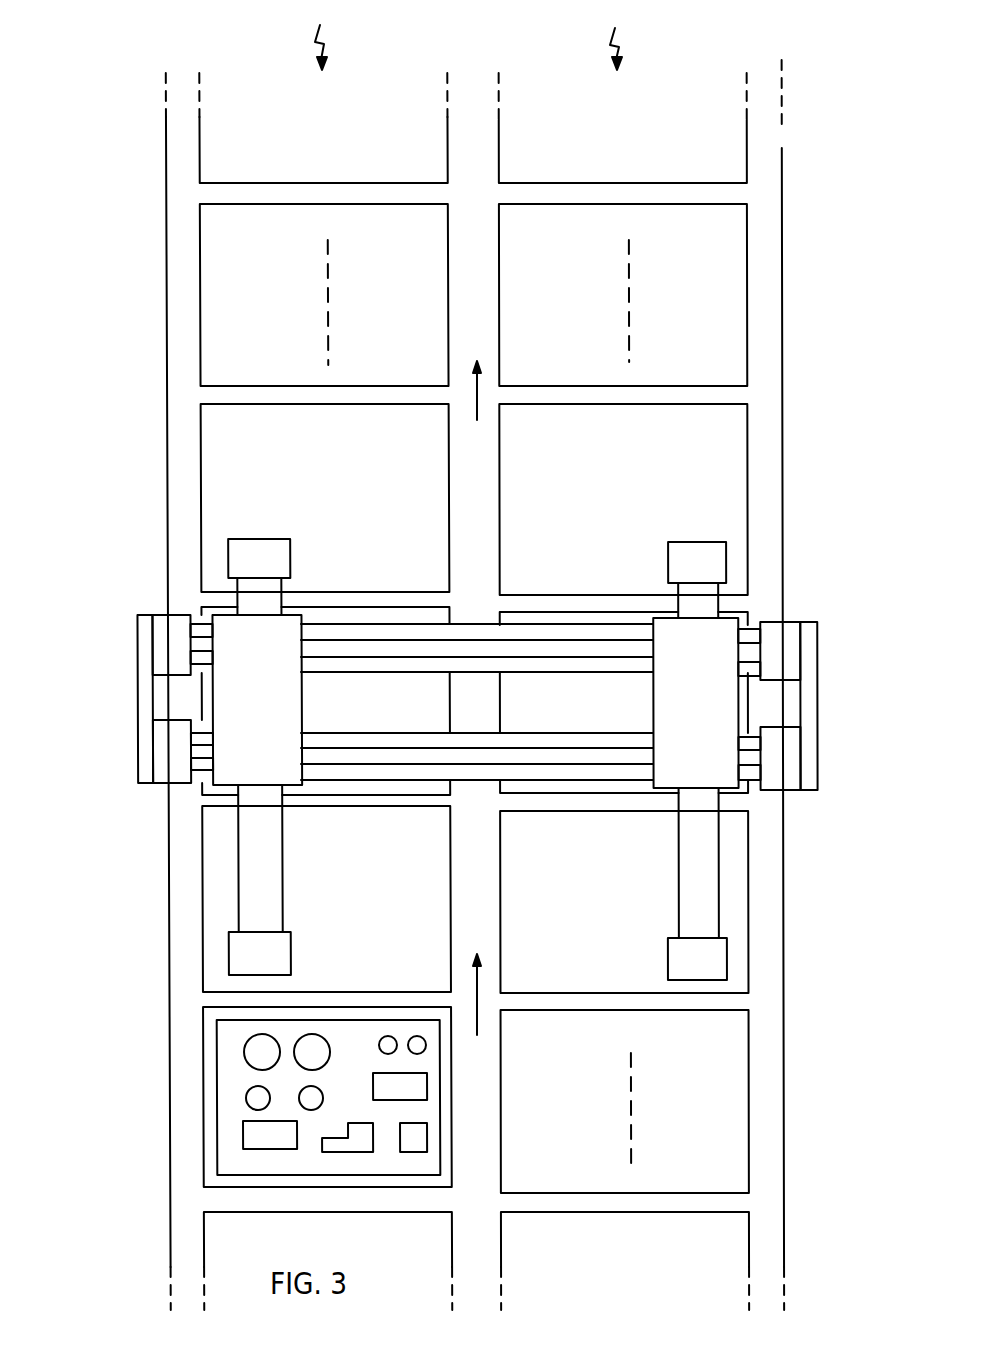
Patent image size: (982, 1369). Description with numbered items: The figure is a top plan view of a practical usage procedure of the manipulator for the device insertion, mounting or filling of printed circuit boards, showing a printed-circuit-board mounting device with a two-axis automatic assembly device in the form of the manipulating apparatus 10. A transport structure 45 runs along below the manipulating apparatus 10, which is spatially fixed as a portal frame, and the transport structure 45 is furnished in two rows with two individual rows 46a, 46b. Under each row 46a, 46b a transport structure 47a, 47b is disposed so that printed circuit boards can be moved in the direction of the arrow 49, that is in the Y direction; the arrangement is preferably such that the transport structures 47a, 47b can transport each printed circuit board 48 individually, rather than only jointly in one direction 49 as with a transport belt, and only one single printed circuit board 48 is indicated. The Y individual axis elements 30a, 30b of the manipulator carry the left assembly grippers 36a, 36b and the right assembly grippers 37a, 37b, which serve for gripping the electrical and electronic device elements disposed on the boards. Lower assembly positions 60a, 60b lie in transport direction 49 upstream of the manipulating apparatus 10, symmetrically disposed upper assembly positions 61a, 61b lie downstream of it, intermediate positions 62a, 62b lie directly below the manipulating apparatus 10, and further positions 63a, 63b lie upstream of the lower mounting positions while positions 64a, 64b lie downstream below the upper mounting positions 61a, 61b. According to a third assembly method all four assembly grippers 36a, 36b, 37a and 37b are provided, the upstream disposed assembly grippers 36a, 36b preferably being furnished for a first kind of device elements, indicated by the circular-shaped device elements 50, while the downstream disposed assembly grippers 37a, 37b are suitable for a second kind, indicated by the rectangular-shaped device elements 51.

The manipulating apparatus 10 is at (122, 582).
The Y individual axis element 30a is at (296, 842).
The Y individual axis element 30b is at (666, 835).
The left assembly gripper 36a is at (300, 940).
The left assembly gripper 36b is at (660, 948).
The right assembly gripper 37a is at (297, 550).
The right assembly gripper 37b is at (670, 539).
The transport structure 45 is at (782, 191).
The individual row 46a is at (317, 35).
The individual row 46b is at (618, 35).
The transport structure 47a is at (330, 282).
The transport structure 47b is at (630, 283).
The printed circuit board 48 is at (217, 1035).
The arrow 49 is at (480, 400).
The circular-shaped device element 50 is at (321, 1047).
The rectangular-shaped device element 51 is at (273, 1145).
The lower assembly position 60a is at (210, 890).
The lower assembly position 60b is at (748, 900).
The upper assembly position 61a is at (213, 443).
The upper assembly position 61b is at (735, 466).
The intermediate position 62a is at (203, 688).
The intermediate position 62b is at (742, 698).
The position upstream of the lower mounting position 63a is at (203, 1102).
The position upstream of the lower mounting position 63b is at (738, 1107).
The position downstream of the upper mounting position 64a is at (222, 258).
The position downstream of the upper mounting position 64b is at (738, 278).